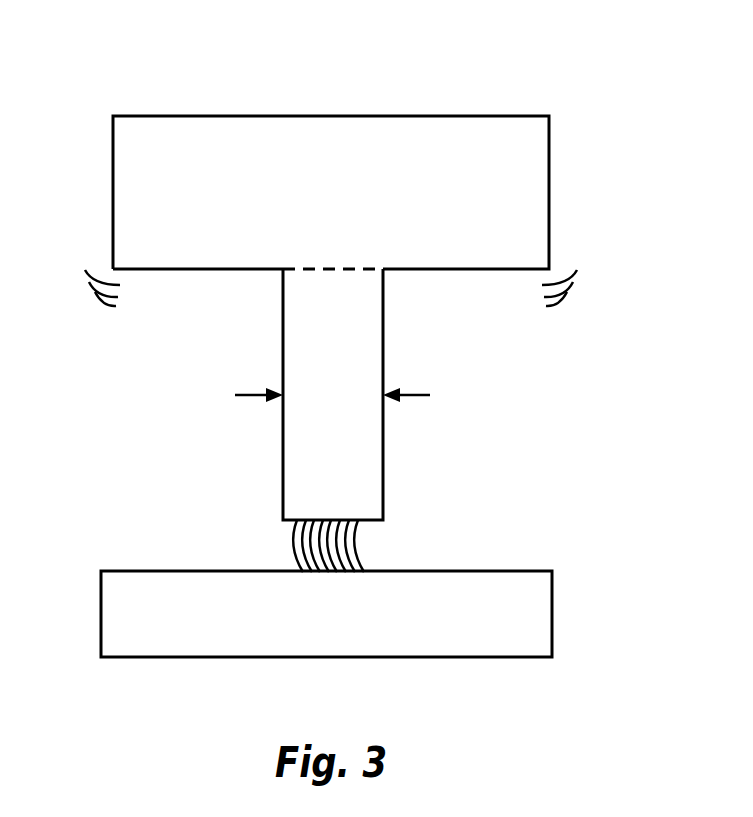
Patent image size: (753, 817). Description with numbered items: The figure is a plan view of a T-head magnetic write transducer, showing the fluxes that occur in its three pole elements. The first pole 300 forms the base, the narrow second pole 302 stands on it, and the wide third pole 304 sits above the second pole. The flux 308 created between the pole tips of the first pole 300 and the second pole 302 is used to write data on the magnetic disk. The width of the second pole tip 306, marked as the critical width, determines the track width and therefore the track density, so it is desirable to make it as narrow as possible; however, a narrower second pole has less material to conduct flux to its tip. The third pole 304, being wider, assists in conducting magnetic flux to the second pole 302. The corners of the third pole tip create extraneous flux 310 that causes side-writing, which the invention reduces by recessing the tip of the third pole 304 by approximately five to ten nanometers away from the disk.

The pole P1 300 is at (537, 611).
The pole P2 302 is at (283, 302).
The pole P3 304 is at (355, 116).
The width of pole tip P2 306 is at (615, 398).
The flux 308 is at (293, 543).
The extraneous flux 310 is at (106, 272).